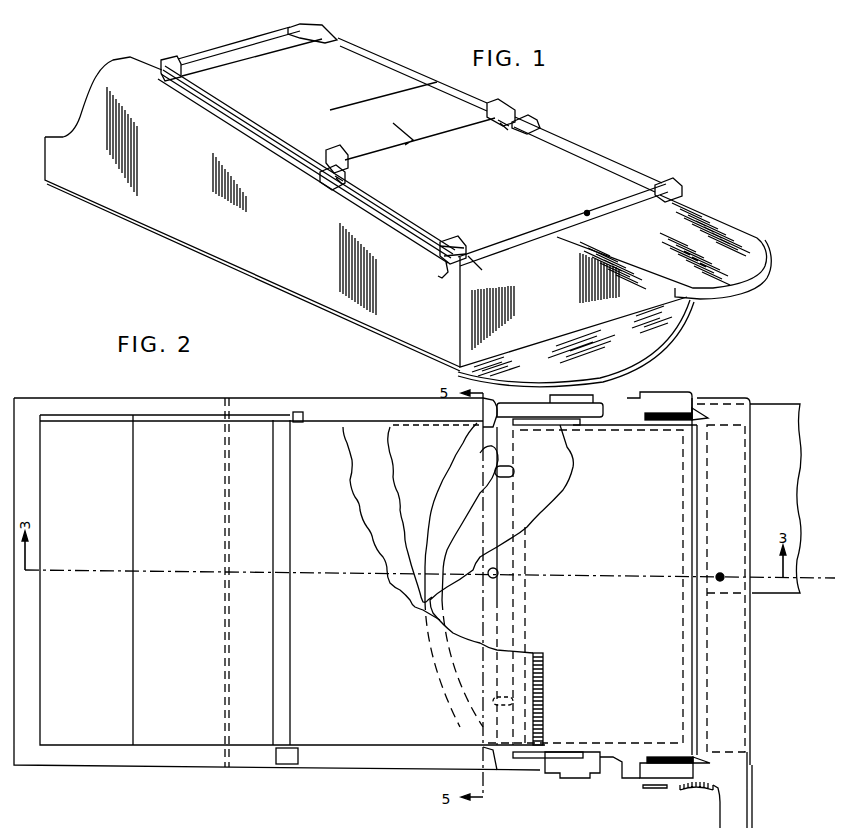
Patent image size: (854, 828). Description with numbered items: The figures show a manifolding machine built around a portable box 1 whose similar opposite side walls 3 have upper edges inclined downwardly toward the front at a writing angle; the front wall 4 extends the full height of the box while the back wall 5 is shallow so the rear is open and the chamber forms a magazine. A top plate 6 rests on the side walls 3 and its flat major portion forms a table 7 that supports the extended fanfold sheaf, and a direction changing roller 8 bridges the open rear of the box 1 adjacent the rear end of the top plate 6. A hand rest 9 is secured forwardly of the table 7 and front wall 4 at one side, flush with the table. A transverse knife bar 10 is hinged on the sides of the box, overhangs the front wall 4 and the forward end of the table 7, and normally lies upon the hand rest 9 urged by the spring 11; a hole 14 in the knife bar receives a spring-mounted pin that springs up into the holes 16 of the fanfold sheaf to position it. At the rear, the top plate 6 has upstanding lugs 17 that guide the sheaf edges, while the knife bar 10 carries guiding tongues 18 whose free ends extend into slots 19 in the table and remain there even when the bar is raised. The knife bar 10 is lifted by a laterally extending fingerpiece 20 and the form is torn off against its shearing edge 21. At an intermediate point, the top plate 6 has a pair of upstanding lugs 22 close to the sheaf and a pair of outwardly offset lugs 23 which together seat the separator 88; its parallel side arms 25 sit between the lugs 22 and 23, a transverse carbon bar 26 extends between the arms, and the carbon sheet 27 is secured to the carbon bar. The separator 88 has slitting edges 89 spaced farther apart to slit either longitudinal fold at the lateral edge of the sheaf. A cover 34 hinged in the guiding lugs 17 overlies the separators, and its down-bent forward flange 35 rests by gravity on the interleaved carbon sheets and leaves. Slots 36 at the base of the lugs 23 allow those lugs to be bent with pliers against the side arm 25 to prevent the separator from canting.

In FIG. 1, the portable box 1 is at (287, 272).
In FIG. 1, the side walls 3 is at (98, 108).
In FIG. 2, the side walls 3 is at (97, 398).
In FIG. 1, the front wall 4 is at (455, 370).
In FIG. 1, the back wall 5 is at (58, 135).
In FIG. 1, the top plate 6 is at (183, 90).
In FIG. 2, the top plate 6 is at (242, 735).
In FIG. 1, the table 7 is at (540, 153).
In FIG. 2, the direction changing roller 8 is at (183, 418).
In FIG. 1, the hand rest 9 is at (693, 210).
In FIG. 2, the hand rest 9 is at (773, 408).
In FIG. 1, the knife bar 10 is at (519, 230).
In FIG. 2, the knife bar 10 is at (727, 413).
In FIG. 1, the spring 11 is at (440, 277).
In FIG. 2, the spring 11 is at (690, 795).
In FIG. 1, the hole 14 is at (587, 213).
In FIG. 2, the hole 14 is at (722, 573).
In FIG. 2, the holes 16 is at (500, 571).
In FIG. 1, the upstanding lugs 17 is at (162, 63).
In FIG. 2, the upstanding lugs 17 is at (300, 414).
In FIG. 1, the guiding tongues 18 is at (460, 243).
In FIG. 2, the guiding tongues 18 is at (672, 418).
In FIG. 1, the slots 19 is at (437, 239).
In FIG. 2, the slots 19 is at (660, 416).
In FIG. 1, the fingerpiece 20 is at (445, 249).
In FIG. 2, the fingerpiece 20 is at (733, 800).
In FIG. 1, the shearing edge 21 is at (482, 258).
In FIG. 1, the upstanding lugs 22 is at (331, 157).
In FIG. 2, the upstanding lugs 22 is at (534, 426).
In FIG. 1, the upstanding lugs 23 is at (330, 182).
In FIG. 2, the upstanding lugs 23 is at (587, 398).
In FIG. 2, the side arms 25 is at (537, 403).
In FIG. 2, the carbon bar 26 is at (500, 507).
In FIG. 2, the carbon sheet 27 is at (527, 510).
In FIG. 1, the cover 34 is at (267, 107).
In FIG. 2, the cover 34 is at (370, 733).
In FIG. 1, the flange 35 is at (457, 132).
In FIG. 2, the flange 35 is at (543, 680).
In FIG. 1, the slots 36 is at (340, 188).
In FIG. 2, the separator 88 is at (429, 490).
In FIG. 2, the slitting edges 89 is at (480, 420).